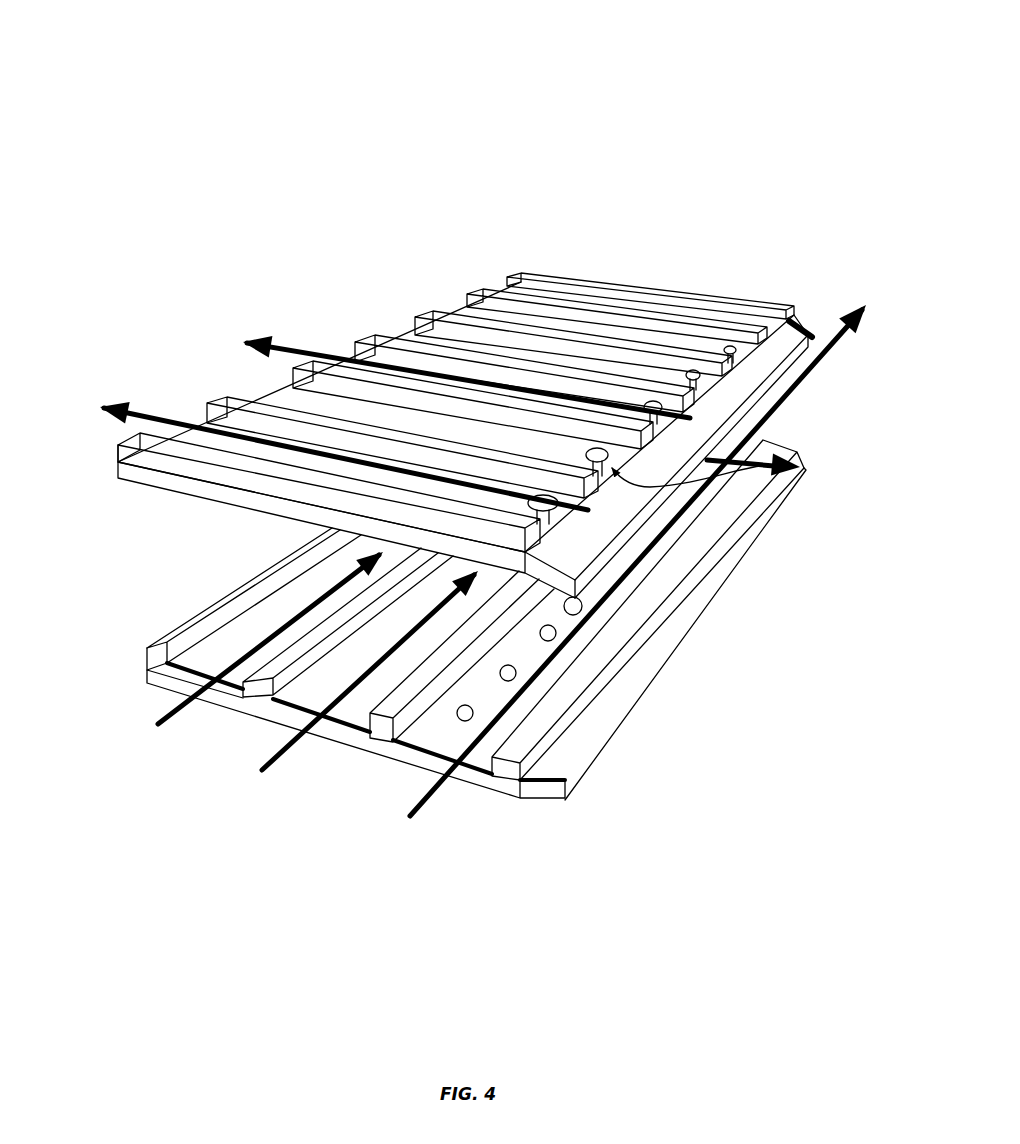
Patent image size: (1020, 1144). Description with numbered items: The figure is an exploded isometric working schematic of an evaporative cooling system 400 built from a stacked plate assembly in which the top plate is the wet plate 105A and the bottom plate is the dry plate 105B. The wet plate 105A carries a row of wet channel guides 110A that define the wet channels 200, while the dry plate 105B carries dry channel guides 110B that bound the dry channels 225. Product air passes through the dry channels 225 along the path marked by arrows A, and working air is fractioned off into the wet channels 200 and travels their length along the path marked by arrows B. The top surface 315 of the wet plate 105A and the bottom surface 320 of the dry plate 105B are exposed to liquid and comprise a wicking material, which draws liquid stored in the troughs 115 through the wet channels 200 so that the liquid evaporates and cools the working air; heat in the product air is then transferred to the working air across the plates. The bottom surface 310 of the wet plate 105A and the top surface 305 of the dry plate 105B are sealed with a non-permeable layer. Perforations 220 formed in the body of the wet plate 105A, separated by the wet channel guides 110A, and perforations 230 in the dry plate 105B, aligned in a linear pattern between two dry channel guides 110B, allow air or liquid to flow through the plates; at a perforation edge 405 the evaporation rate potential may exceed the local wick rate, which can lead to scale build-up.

The evaporative cooling system 400 is at (142, 64).
The wet plate 105A is at (616, 276).
The dry plate 105B is at (548, 829).
The wet channel guides 110A is at (468, 292).
The dry channel guides 110B is at (373, 742).
The troughs 115 is at (802, 316).
The wet channels 200 is at (394, 325).
The perforations 220 is at (700, 371).
The dry channels 225 is at (246, 620).
The perforations 230 is at (452, 715).
The top surface of the dry plate 305 is at (288, 688).
The bottom surface of the wet plate 310 is at (179, 496).
The top surface of the wet plate 315 is at (285, 393).
The bottom surface of the dry plate 320 is at (322, 745).
The perforation edge 405 is at (785, 468).